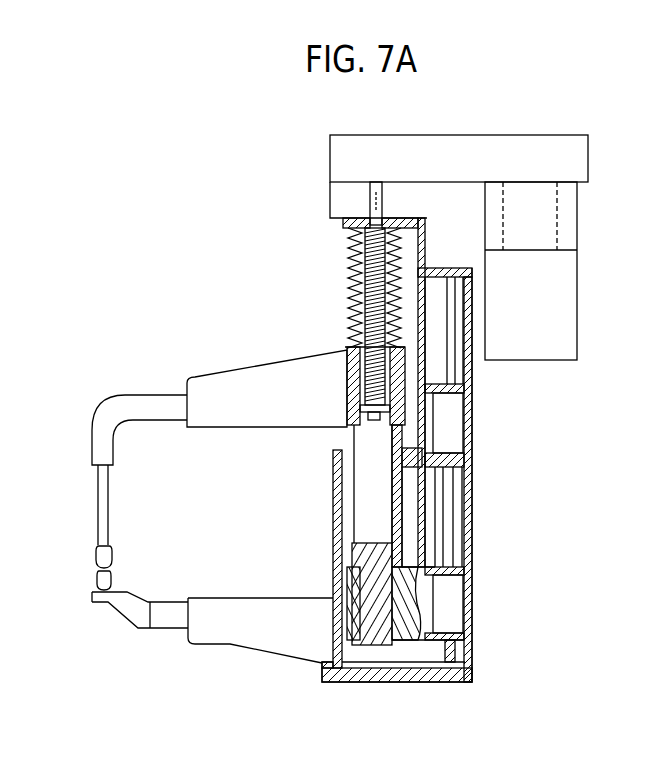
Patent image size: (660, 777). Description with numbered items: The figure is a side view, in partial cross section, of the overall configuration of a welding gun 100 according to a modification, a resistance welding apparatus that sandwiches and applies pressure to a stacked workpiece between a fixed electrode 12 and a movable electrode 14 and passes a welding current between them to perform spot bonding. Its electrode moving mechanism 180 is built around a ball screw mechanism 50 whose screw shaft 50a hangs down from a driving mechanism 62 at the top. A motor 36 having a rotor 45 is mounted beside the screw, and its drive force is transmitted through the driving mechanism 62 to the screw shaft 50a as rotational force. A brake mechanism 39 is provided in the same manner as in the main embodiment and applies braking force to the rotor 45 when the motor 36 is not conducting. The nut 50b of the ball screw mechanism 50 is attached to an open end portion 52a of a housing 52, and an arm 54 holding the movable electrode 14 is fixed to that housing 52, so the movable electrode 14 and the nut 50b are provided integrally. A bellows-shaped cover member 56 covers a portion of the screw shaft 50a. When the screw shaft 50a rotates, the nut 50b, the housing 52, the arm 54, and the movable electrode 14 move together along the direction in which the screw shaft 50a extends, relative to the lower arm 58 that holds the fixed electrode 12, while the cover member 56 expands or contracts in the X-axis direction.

The welding gun 100 is at (491, 128).
The electrode moving mechanism 180 is at (300, 207).
The driving mechanism 62 is at (580, 162).
The brake mechanism 39 is at (577, 196).
The rotor 45 is at (558, 229).
The motor 36 is at (577, 301).
The cover member 56 is at (348, 247).
The ball screw mechanism 50 is at (273, 273).
The screw shaft 50a is at (348, 293).
The nut 50b is at (348, 343).
The housing 52 is at (347, 437).
The open end portion 52a is at (347, 390).
The arm 54 is at (207, 387).
The movable electrode 14 is at (112, 557).
The fixed electrode 12 is at (110, 580).
The arm 58 is at (215, 630).